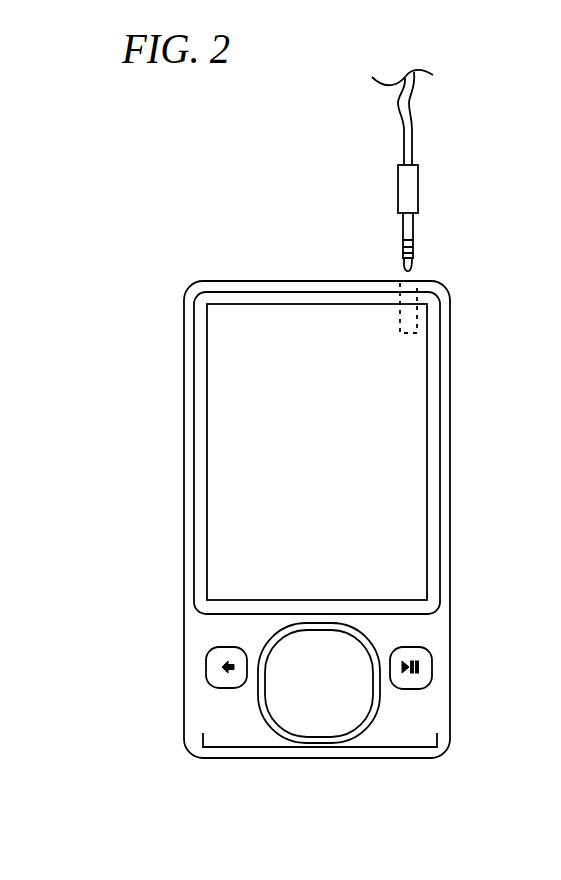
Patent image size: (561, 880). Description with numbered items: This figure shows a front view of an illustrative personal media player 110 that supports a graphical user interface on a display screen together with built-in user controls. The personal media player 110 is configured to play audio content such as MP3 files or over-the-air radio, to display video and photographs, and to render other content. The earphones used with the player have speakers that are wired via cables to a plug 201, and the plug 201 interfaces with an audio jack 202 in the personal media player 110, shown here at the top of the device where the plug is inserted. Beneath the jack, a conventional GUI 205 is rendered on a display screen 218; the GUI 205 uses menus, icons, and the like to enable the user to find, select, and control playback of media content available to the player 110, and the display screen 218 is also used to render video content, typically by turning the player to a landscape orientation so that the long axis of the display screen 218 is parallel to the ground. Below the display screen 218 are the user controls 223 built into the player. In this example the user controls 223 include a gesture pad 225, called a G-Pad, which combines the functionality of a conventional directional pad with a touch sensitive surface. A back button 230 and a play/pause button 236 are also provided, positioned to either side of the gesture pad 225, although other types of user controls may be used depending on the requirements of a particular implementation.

The personal media player 110 is at (226, 280).
The plug 201 is at (398, 179).
The audio jack 202 is at (408, 320).
The GUI 205 is at (393, 355).
The display screen 218 is at (375, 500).
The user controls 223 is at (320, 748).
The gesture pad 225 is at (318, 680).
The back button 230 is at (218, 677).
The play/pause button 236 is at (412, 682).